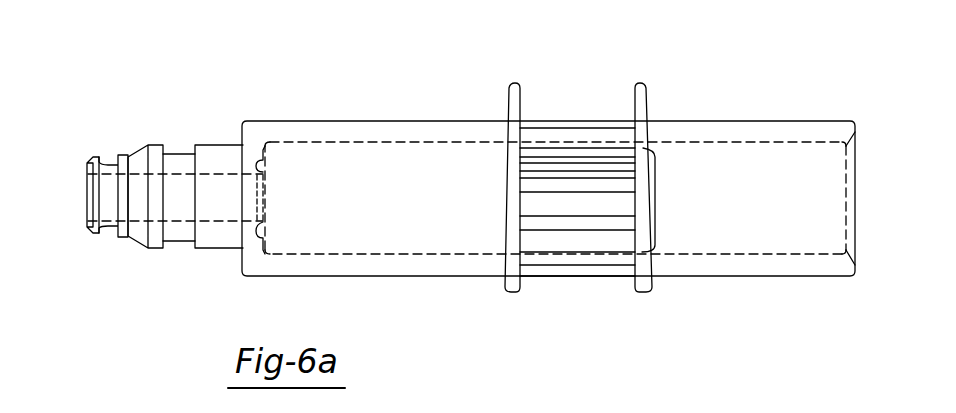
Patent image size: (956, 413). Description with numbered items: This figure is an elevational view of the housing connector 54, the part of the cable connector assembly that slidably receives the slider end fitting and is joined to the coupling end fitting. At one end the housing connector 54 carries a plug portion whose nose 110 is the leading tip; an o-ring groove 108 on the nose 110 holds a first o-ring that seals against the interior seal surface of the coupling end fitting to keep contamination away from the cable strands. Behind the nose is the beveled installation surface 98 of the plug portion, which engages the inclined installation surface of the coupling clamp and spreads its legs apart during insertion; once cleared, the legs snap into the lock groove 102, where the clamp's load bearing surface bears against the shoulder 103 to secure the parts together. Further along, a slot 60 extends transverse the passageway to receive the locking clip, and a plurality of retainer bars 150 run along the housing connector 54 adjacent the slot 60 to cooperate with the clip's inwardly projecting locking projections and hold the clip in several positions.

The housing connector 54 is at (308, 121).
The slot 60 is at (565, 127).
The beveled installation surface 98 is at (147, 148).
The lock groove 102 is at (178, 242).
The shoulder 103 is at (165, 153).
The o-ring groove 108 is at (110, 160).
The nose 110 is at (92, 233).
The retainer bars 150 is at (655, 200).